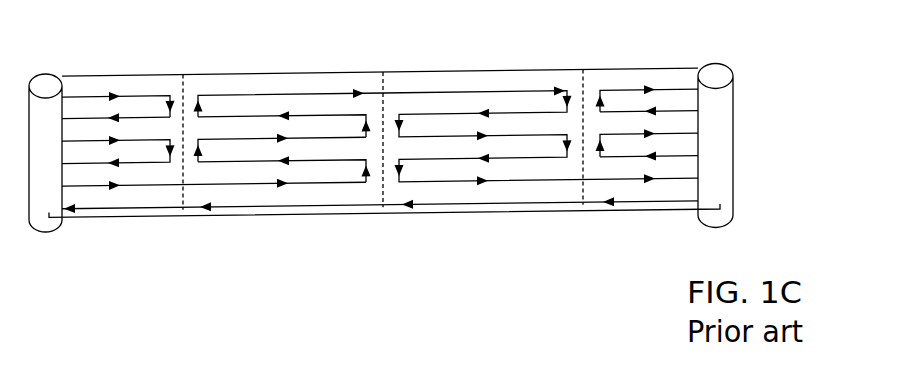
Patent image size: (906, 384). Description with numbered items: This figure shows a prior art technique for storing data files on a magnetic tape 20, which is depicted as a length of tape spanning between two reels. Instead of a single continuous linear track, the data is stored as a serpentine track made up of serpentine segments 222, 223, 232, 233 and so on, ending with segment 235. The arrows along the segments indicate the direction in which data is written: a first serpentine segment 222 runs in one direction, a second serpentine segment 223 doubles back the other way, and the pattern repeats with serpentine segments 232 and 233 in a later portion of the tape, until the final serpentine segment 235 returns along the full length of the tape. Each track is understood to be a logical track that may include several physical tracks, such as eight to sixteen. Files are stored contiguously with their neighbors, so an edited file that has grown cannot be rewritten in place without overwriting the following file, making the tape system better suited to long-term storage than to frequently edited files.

The magnetic tape 20 is at (113, 223).
The serpentine segment 222 is at (96, 95).
The serpentine segment 223 is at (132, 120).
The serpentine segment 232 is at (298, 92).
The serpentine segment 233 is at (356, 112).
The serpentine segment 235 is at (352, 207).